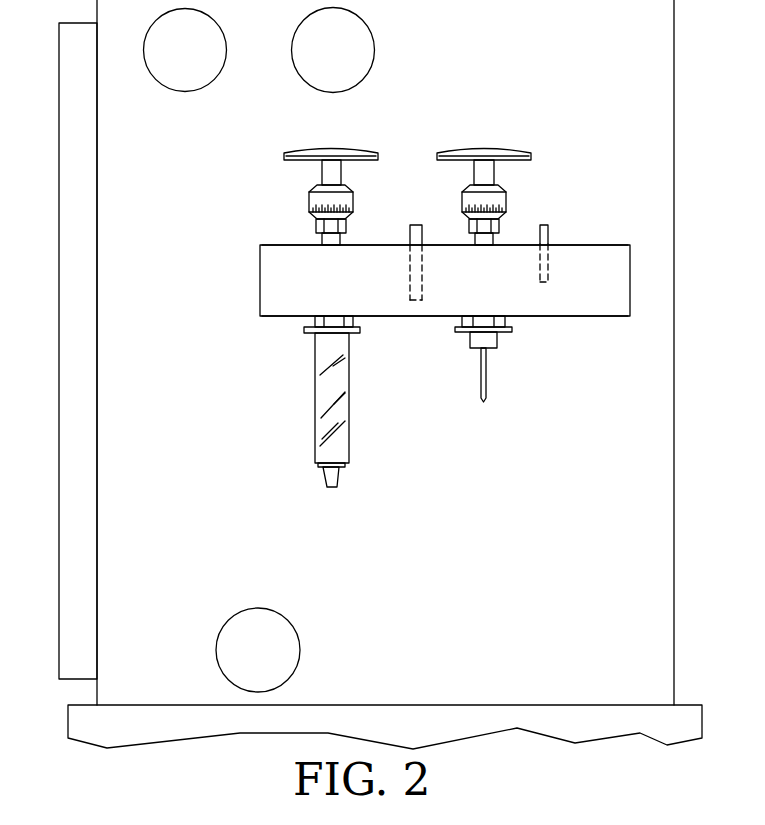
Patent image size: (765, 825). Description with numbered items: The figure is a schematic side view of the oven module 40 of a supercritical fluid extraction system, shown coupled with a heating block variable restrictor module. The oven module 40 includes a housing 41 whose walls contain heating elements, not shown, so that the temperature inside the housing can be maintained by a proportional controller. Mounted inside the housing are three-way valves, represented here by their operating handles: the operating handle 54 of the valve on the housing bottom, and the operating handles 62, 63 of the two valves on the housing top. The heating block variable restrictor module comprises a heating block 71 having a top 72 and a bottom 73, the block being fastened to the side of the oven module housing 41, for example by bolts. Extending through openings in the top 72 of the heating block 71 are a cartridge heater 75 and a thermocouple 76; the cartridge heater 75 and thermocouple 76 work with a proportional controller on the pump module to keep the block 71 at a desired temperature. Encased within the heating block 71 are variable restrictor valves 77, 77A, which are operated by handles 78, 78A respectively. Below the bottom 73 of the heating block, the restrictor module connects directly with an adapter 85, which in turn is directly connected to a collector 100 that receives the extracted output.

The oven module 40 is at (731, 501).
The housing 41 is at (680, 147).
The operating handle 54 is at (279, 640).
The operating handle 62 is at (185, 78).
The operating handle 63 is at (362, 47).
The heating block 71 is at (252, 279).
The top 72 is at (276, 245).
The bottom 73 is at (582, 318).
The cartridge heater 75 is at (413, 226).
The thermocouple 76 is at (549, 239).
The variable restrictor valve 77 is at (300, 200).
The variable restrictor valve 77A is at (516, 194).
The handle 78 is at (330, 147).
The handle 78A is at (485, 146).
The adapter 85 is at (460, 359).
The collector 100 is at (306, 400).